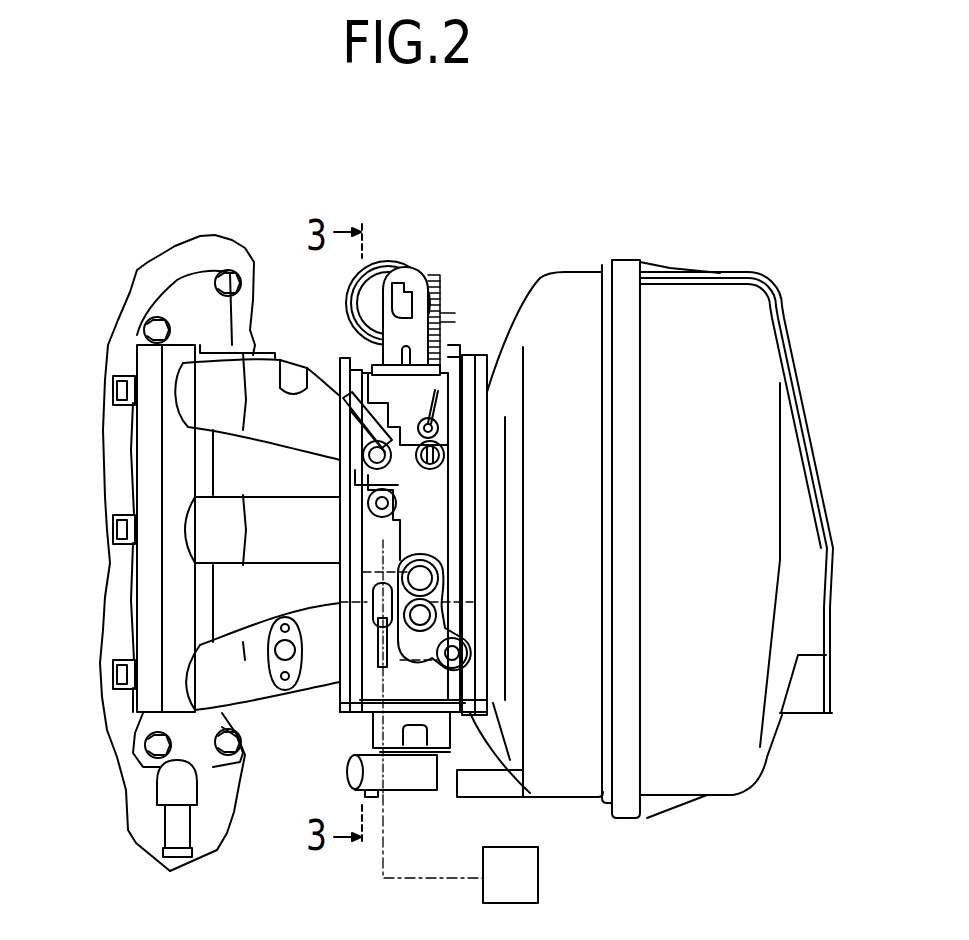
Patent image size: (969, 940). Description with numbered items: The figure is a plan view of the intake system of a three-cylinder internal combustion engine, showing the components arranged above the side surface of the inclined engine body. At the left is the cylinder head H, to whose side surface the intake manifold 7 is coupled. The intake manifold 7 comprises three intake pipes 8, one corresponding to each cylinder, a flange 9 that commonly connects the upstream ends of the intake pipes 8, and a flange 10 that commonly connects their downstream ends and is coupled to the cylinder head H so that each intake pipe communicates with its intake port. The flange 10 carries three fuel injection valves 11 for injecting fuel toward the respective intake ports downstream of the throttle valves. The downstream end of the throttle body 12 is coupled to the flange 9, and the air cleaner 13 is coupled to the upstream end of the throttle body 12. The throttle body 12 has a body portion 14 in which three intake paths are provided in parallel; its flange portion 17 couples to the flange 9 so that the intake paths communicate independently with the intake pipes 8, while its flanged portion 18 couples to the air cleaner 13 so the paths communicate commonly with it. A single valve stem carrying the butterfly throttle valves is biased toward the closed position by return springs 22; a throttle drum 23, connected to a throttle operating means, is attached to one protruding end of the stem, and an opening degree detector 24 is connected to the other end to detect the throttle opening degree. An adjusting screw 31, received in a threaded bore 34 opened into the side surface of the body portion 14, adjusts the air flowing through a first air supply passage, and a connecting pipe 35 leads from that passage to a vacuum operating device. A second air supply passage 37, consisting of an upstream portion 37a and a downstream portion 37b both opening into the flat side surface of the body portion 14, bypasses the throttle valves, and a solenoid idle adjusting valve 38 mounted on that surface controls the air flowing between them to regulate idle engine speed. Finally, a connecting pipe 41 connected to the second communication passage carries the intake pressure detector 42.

The cylinder head H is at (126, 776).
The intake manifold 7 is at (270, 702).
The intake pipes 8 is at (266, 429).
The flange 9 is at (348, 703).
The flange 10 is at (198, 790).
The fuel injection valves 11 is at (113, 387).
The throttle body 12 is at (472, 393).
The air cleaner 13 is at (680, 542).
The body portion 14 is at (442, 525).
The flange portion 17 is at (299, 653).
The flanged portion 18 is at (465, 697).
The return springs 22 is at (443, 338).
The throttle drum 23 is at (443, 313).
The opening degree detector 24 is at (440, 733).
The adjusting screw 31 is at (399, 504).
The threaded bore 34 is at (385, 473).
The connecting pipe 35 is at (344, 428).
The second air supply passage 37 is at (583, 558).
The upstream portion 37a is at (422, 615).
The downstream portion 37b is at (422, 580).
The idle adjusting valve 38 is at (440, 465).
The connecting pipe 41 is at (385, 660).
The intake pressure detector 42 is at (524, 894).